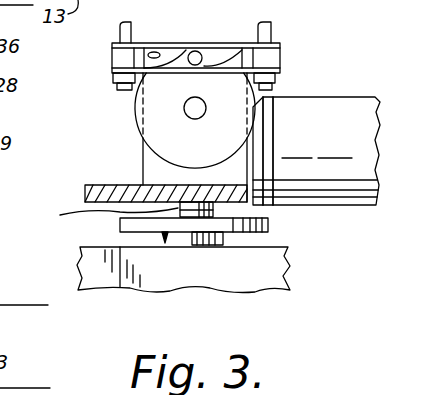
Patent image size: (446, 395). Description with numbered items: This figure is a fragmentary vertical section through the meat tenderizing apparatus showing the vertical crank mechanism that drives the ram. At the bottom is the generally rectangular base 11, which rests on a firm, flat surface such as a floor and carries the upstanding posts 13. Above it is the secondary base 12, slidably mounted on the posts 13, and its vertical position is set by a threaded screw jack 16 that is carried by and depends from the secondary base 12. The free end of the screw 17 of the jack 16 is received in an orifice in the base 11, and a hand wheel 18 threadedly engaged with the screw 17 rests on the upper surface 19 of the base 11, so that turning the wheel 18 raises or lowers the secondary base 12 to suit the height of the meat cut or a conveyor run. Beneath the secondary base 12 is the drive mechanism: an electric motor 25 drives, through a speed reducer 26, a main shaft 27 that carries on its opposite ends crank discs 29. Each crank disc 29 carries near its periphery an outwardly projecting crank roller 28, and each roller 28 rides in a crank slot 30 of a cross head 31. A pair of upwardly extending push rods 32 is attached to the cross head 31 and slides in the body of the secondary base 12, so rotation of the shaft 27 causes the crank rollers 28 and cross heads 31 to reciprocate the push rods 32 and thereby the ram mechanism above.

The base 11 is at (268, 270).
The secondary base 12 is at (86, 192).
The upstanding posts 13 is at (342, 0).
The threaded screw jack 16 is at (203, 245).
The screw 17 is at (106, 213).
The hand wheel 18 is at (272, 228).
The upper surface 19 is at (95, 247).
The electric motor 25 is at (348, 108).
The speed reducer 26 is at (145, 160).
The main shaft 27 is at (190, 117).
The crank roller 28 is at (195, 51).
The crank disc 29 is at (255, 131).
The crank slot 30 is at (153, 52).
The cross head 31 is at (231, 43).
The push rods 32 is at (118, 33).